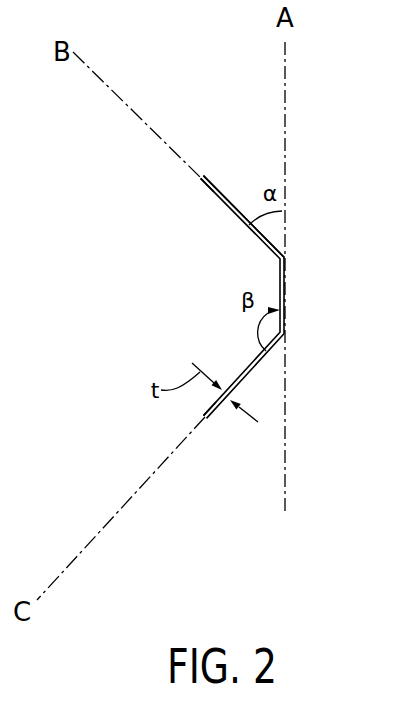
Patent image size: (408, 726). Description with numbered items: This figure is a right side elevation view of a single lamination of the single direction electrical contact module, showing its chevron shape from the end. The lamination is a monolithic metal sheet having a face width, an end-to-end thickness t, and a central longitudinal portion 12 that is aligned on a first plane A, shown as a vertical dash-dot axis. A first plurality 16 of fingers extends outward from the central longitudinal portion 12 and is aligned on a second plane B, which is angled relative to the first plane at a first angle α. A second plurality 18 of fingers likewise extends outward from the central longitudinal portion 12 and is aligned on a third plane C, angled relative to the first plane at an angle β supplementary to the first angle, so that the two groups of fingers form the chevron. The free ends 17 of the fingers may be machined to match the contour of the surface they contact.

The central longitudinal portion 12 is at (303, 320).
The first plurality of fingers 16 is at (224, 177).
The free ends of fingers 17 is at (201, 180).
The second plurality of fingers 18 is at (212, 414).